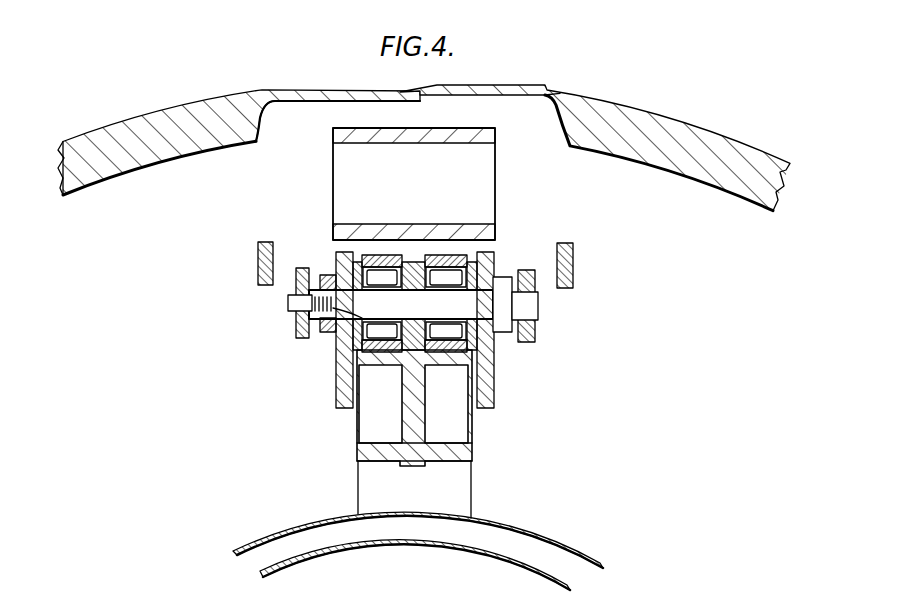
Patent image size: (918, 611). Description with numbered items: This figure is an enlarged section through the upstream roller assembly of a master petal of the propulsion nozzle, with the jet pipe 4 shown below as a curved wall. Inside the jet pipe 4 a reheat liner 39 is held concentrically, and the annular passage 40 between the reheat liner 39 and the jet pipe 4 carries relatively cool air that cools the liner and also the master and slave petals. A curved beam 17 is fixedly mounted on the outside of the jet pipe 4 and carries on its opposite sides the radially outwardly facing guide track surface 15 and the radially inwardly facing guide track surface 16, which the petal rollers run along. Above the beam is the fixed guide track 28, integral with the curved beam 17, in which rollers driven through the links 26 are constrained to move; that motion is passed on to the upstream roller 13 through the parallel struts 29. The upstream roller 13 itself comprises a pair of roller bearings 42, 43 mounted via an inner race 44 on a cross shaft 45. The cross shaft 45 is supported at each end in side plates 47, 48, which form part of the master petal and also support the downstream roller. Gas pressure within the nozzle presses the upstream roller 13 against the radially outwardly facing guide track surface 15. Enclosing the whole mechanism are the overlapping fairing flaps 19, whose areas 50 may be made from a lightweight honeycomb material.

The jet pipe 4 is at (523, 535).
The upstream roller 13 is at (433, 250).
The radially outwardly facing guide track surface 15 is at (382, 434).
The radially inwardly facing guide track surface 16 is at (383, 461).
The curved beam 17 is at (430, 408).
The fairing flap 19 is at (427, 138).
The link 26 is at (257, 246).
The fixed guide track 28 is at (478, 147).
The parallel strut 29 is at (558, 333).
The reheat liner 39 is at (415, 568).
The annular passage 40 is at (510, 541).
The roller bearing 42 is at (358, 341).
The roller bearing 43 is at (443, 348).
The inner race 44 is at (407, 308).
The cross shaft 45 is at (482, 304).
The side plate 47 is at (338, 376).
The side plate 48 is at (486, 360).
The area of fairing flap 50 is at (80, 145).